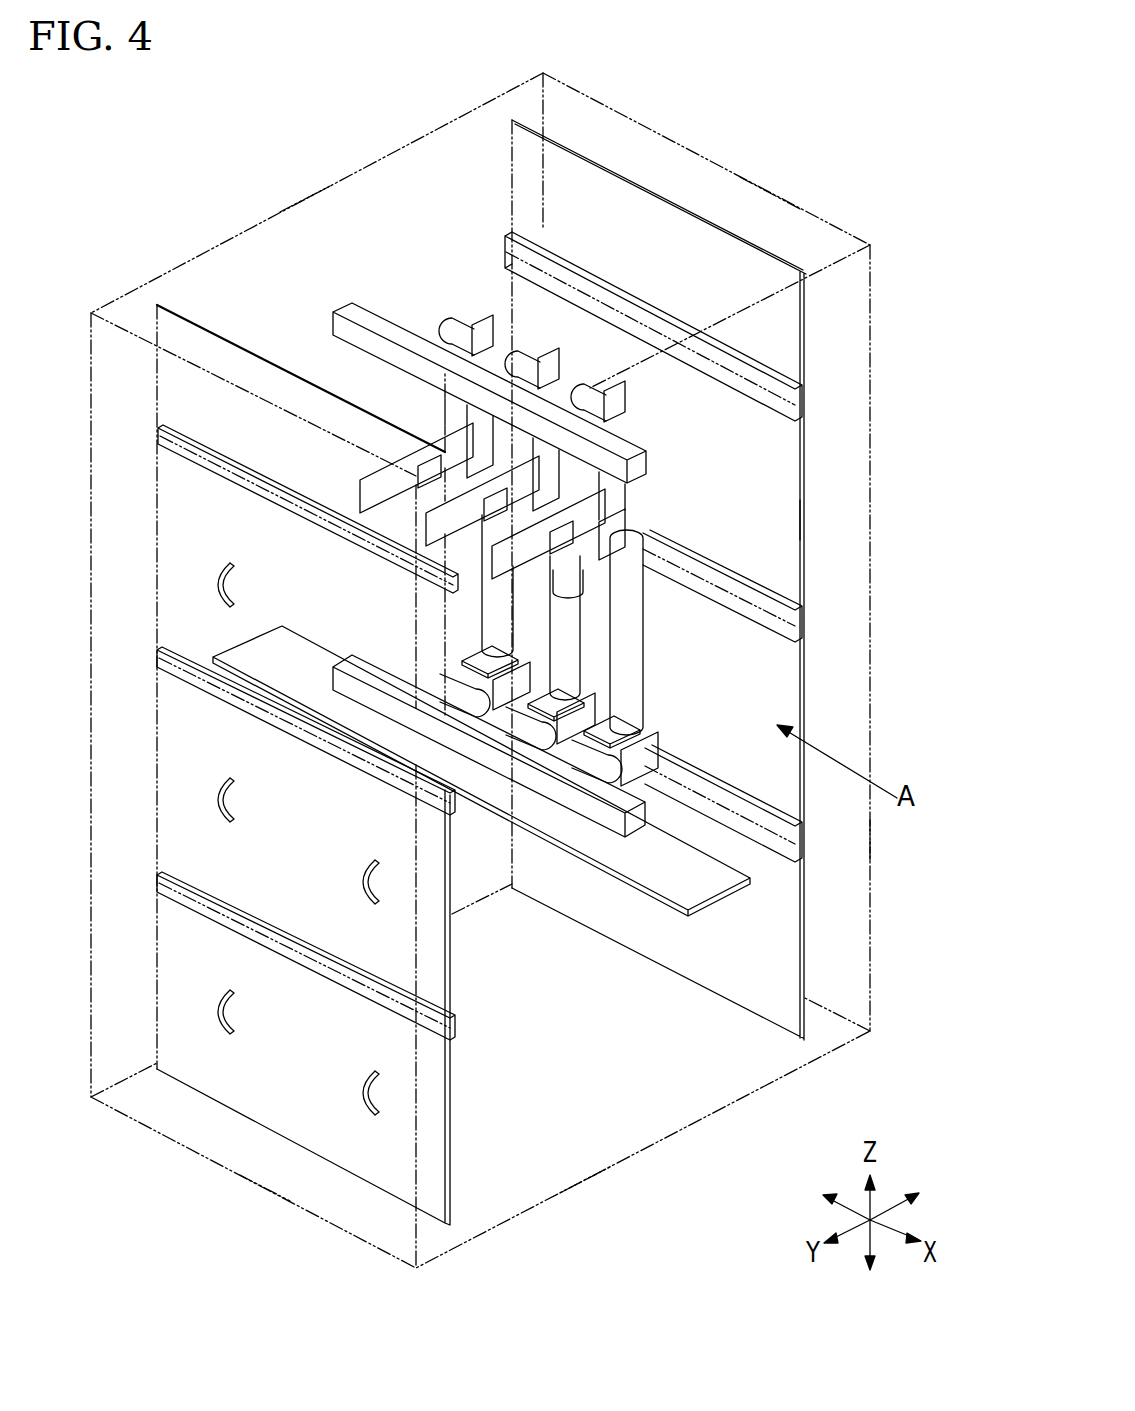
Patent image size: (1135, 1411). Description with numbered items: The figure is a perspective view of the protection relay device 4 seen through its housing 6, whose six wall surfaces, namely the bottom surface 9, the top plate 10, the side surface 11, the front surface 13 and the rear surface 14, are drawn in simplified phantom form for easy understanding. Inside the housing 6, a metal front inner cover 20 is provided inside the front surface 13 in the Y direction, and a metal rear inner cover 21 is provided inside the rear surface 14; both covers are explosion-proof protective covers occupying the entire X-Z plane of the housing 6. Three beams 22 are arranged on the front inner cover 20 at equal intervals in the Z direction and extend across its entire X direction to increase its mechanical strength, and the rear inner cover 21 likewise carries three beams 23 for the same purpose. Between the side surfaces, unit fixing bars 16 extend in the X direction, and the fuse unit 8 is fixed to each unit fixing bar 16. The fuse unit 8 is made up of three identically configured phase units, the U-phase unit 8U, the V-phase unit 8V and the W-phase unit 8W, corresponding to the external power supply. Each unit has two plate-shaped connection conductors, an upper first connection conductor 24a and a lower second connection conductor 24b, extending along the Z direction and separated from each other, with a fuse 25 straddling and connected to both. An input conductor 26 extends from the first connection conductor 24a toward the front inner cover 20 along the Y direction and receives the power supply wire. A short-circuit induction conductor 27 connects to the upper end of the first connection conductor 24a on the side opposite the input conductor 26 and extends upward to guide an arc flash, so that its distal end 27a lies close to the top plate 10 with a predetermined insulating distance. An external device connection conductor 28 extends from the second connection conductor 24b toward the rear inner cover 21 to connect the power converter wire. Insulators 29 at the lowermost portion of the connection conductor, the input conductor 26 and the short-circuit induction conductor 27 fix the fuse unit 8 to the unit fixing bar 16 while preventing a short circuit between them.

The protection relay device 4 is at (769, 149).
The housing 6 is at (699, 1121).
The fuse unit 8 is at (531, 728).
The U-phase unit 8U is at (487, 324).
The V-phase unit 8V is at (548, 358).
The W-phase unit 8W is at (628, 425).
The bottom surface 9 is at (583, 1162).
The top plate 10 is at (303, 215).
The side surface 11 is at (842, 836).
The front surface 13 is at (260, 1188).
The rear surface 14 is at (868, 488).
The unit fixing bar 16 is at (408, 326).
The front inner cover 20 is at (157, 573).
The rear inner cover 21 is at (806, 520).
The beam 22 is at (255, 483).
The beam 23 is at (766, 355).
The first connection conductor 24a is at (613, 542).
The second connection conductor 24b is at (520, 647).
The fuse 25 is at (643, 583).
The input conductor 26 is at (360, 497).
The short-circuit induction conductor 27 is at (477, 417).
The distal end 27a is at (470, 312).
The external device connection conductor 28 is at (650, 752).
The insulator 29 is at (510, 368).